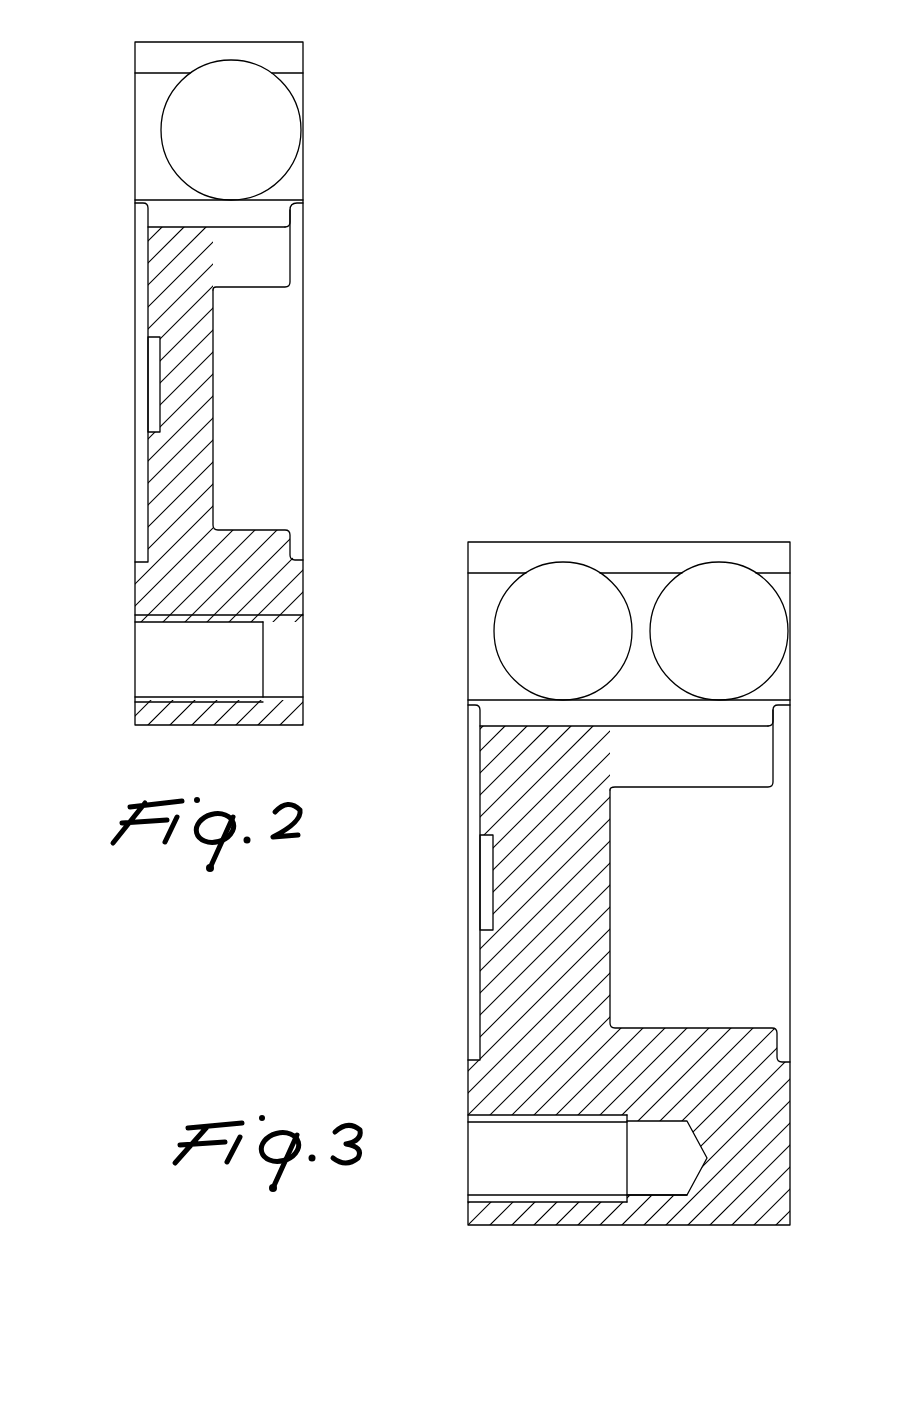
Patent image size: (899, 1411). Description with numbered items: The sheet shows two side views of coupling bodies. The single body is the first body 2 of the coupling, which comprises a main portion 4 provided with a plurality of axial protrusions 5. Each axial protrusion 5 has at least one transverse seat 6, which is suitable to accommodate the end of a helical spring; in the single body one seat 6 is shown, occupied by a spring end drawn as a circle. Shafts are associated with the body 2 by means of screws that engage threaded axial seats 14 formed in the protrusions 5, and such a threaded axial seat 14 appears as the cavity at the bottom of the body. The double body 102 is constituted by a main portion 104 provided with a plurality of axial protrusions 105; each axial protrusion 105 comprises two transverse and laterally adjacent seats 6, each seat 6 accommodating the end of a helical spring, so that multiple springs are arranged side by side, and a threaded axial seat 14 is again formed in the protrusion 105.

In FIG. 2, the first body 2 is at (92, 207).
In FIG. 2, the main portion 4 is at (197, 399).
In FIG. 2, the axial protrusion 5 is at (303, 78).
In FIG. 2, the transverse seat 6 is at (272, 142).
In FIG. 3, the transverse seat 6 is at (560, 588).
In FIG. 2, the threaded axial seat 14 is at (165, 668).
In FIG. 3, the threaded axial seat 14 is at (483, 1175).
In FIG. 3, the body 102 is at (747, 492).
In FIG. 3, the main portion 104 is at (505, 992).
In FIG. 3, the axial protrusion 105 is at (790, 562).